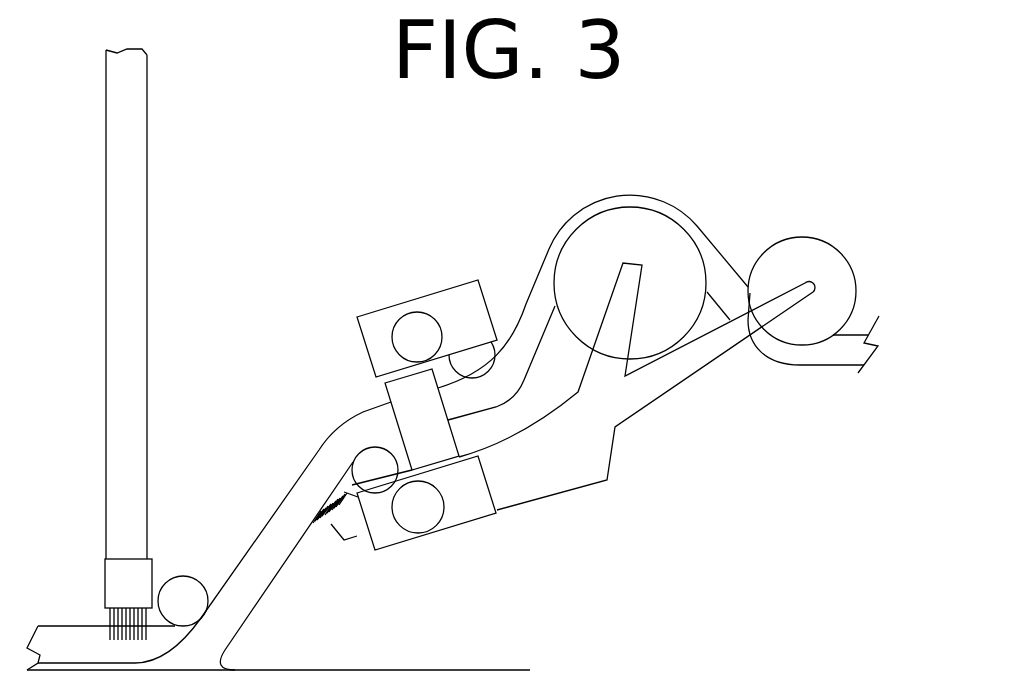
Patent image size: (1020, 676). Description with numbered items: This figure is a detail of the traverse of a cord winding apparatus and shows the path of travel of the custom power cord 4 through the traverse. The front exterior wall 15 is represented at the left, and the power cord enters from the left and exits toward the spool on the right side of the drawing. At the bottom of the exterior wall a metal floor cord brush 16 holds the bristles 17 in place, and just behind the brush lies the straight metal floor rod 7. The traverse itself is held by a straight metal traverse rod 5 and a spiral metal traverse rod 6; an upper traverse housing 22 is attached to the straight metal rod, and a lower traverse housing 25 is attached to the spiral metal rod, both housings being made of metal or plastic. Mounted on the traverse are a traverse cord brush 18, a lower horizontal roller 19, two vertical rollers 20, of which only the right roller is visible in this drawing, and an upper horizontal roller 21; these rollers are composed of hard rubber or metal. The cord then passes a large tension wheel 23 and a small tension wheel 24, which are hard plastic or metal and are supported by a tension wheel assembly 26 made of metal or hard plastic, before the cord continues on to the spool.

The custom power cord 4 is at (250, 595).
The straight metal traverse rod 5 is at (422, 337).
The spiral metal traverse rod 6 is at (425, 512).
The straight metal floor rod 7 is at (185, 592).
The front exterior wall 15 is at (125, 440).
The metal floor cord brush 16 is at (123, 580).
The bristles 17 is at (112, 625).
The traverse cord brush 18 is at (350, 530).
The lower horizontal roller 19 is at (372, 463).
The vertical rollers 20 is at (415, 405).
The upper horizontal roller 21 is at (470, 352).
The upper traverse housing 22 is at (470, 313).
The large tension wheel 23 is at (622, 228).
The small tension wheel 24 is at (795, 260).
The lower traverse housing 25 is at (480, 510).
The tension wheel assembly 26 is at (600, 450).